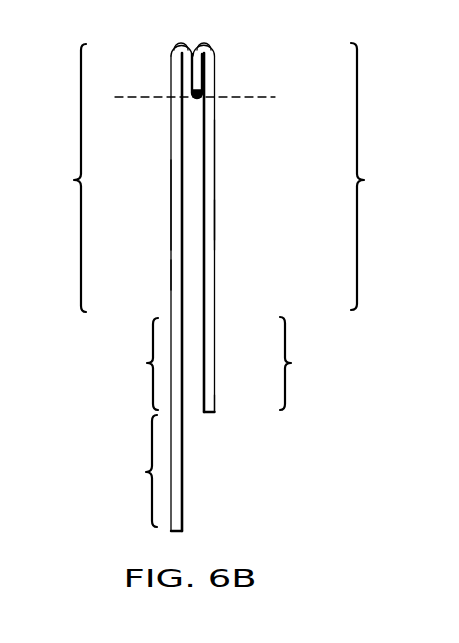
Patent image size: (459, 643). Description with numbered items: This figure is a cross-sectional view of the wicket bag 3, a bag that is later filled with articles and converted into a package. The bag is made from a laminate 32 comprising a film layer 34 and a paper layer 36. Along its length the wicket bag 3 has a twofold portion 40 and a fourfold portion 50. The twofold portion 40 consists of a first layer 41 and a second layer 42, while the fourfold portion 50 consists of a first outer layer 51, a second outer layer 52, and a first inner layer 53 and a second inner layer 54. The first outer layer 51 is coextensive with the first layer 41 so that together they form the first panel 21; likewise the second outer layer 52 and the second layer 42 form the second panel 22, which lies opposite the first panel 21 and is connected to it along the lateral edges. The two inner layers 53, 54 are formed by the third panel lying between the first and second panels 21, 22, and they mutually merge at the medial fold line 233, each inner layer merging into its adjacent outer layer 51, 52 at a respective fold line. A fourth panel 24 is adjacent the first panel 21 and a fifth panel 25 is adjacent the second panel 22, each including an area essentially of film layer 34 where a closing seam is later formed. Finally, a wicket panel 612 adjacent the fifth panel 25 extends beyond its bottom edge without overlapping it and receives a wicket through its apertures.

The wicket bag 3 is at (154, 273).
The first panel 21 is at (372, 176).
The second panel 22 is at (65, 178).
The fourth panel 24 is at (304, 363).
The fifth panel 25 is at (135, 364).
The laminate 32 is at (216, 188).
The film layer 34 is at (206, 340).
The paper layer 36 is at (216, 227).
The twofold portion 40 is at (238, 265).
The first layer 41 is at (170, 158).
The second layer 42 is at (210, 380).
The fourfold portion 50 is at (273, 55).
The first outer layer 51 is at (176, 82).
The second outer layer 52 is at (208, 82).
The first inner layer 53 is at (182, 58).
The second inner layer 54 is at (207, 58).
The medial fold line 233 is at (196, 98).
The wicket panel 612 is at (128, 471).